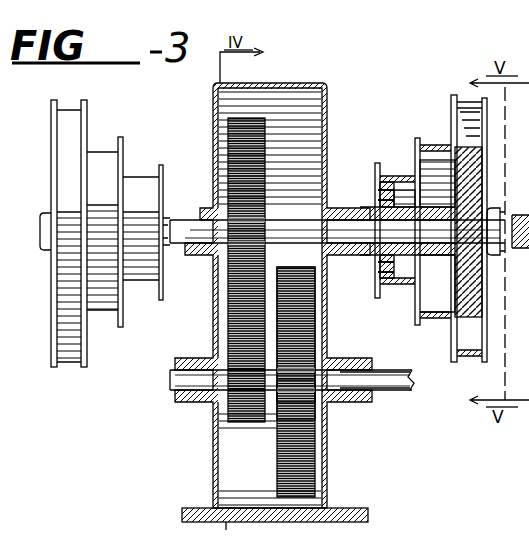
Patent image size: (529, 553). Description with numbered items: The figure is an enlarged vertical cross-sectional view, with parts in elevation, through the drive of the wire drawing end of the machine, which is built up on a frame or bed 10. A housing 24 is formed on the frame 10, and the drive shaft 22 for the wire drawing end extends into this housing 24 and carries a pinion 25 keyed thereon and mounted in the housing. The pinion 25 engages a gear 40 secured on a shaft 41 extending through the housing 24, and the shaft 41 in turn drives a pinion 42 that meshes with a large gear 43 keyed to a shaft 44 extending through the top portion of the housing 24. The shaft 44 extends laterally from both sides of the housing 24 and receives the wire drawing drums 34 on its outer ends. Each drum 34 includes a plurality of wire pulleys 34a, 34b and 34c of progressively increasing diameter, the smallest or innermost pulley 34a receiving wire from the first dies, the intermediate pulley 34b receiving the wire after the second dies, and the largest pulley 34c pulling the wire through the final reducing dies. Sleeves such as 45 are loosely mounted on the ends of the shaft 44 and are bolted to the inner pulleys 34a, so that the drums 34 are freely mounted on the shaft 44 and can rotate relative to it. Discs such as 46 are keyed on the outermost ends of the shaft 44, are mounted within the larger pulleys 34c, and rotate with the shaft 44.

The frame or bed 10 is at (362, 518).
The drive shaft 22 is at (398, 385).
The housing 24 is at (322, 335).
The pinion 25 is at (300, 398).
The wire drawing drum 34 is at (98, 113).
The innermost pulley 34a is at (395, 290).
The intermediate drawing pulley 34b is at (440, 320).
The largest pulley 34c is at (470, 356).
The gear 40 is at (316, 468).
The shaft 41 is at (188, 378).
The pinion 42 is at (250, 400).
The large gear 43 is at (238, 270).
The shaft 44 is at (345, 232).
The sleeve 45 is at (434, 256).
The disc 46 is at (472, 302).